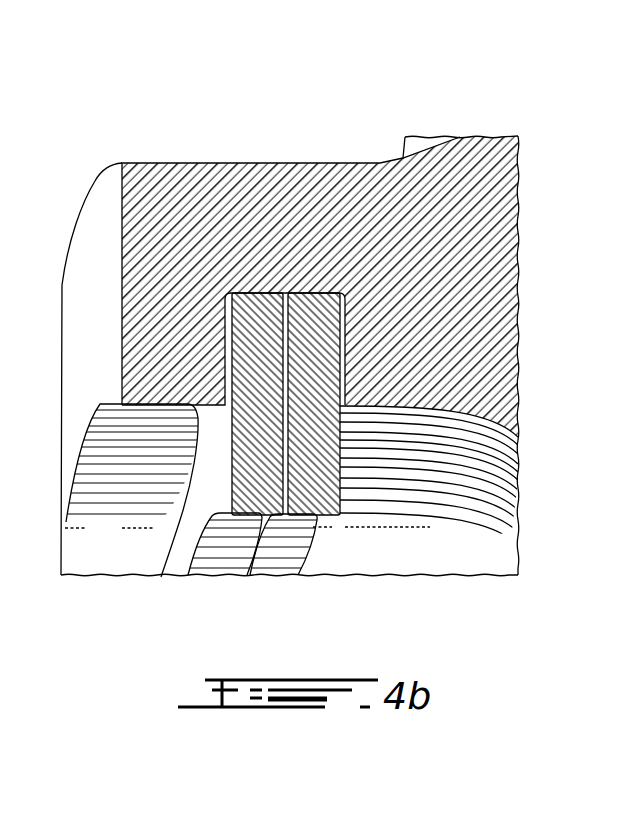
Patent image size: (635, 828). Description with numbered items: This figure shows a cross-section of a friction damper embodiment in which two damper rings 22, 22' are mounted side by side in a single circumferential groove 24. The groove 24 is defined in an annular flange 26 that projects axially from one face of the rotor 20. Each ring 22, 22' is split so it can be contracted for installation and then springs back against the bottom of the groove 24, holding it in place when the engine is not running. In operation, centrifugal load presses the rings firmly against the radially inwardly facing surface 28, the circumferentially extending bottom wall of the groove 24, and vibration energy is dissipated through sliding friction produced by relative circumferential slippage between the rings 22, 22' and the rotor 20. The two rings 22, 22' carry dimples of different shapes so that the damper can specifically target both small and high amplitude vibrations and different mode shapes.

The rotor 20 is at (550, 264).
The damper ring 22 is at (377, 469).
The damper ring 22' is at (214, 474).
The circumferential groove 24 is at (345, 363).
The annular flange 26 is at (160, 210).
The radially inwardly facing surface 28 is at (312, 293).